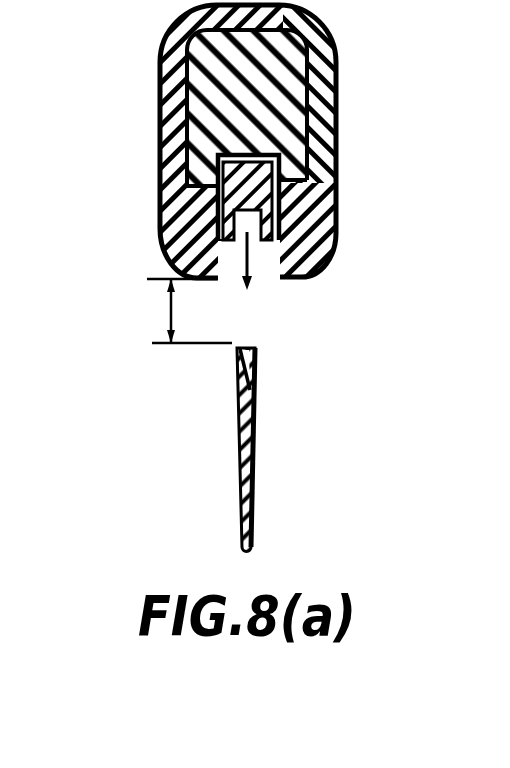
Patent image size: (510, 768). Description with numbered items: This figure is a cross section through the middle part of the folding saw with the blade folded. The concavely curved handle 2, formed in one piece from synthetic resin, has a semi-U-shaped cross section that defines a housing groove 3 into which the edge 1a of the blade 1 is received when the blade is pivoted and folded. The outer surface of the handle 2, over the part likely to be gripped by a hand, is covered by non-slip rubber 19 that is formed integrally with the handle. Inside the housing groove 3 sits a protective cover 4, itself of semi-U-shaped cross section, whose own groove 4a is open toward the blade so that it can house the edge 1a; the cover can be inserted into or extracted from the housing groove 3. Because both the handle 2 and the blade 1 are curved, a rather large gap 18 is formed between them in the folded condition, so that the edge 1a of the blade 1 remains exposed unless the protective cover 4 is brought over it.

The blade 1 is at (260, 481).
The edge 1a is at (250, 346).
The handle 2 is at (208, 100).
The housing groove 3 is at (267, 265).
The protective cover 4 is at (281, 165).
The groove 4a is at (192, 234).
The gap 18 is at (170, 320).
The non-slip rubber 19 is at (330, 58).